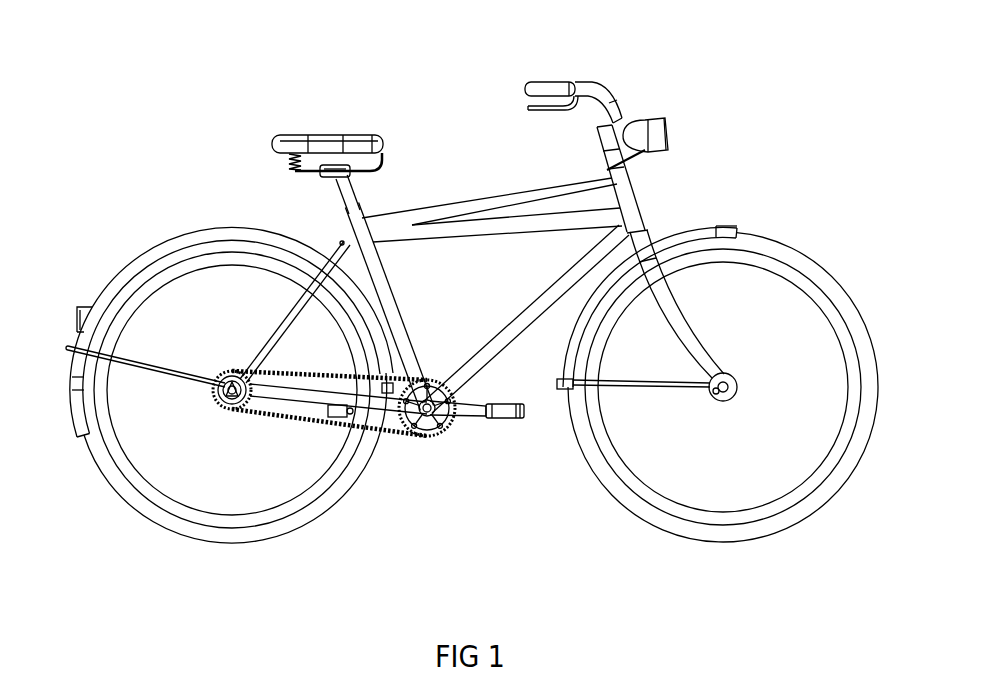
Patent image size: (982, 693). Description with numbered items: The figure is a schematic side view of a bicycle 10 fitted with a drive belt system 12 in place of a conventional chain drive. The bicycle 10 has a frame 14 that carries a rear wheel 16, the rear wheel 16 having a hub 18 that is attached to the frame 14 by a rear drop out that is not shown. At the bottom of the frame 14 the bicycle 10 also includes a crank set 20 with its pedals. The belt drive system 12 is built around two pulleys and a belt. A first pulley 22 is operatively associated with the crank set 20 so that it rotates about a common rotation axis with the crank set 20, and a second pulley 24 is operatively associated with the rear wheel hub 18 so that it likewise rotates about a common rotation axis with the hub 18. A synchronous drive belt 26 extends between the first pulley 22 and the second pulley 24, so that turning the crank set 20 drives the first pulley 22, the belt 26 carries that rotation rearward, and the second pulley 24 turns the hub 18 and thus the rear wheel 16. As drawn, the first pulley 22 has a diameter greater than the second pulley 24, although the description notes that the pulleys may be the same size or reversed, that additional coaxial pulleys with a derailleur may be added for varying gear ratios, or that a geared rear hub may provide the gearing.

The bicycle 10 is at (447, 345).
The drive belt system 12 is at (420, 466).
The frame 14 is at (268, 167).
The rear wheel 16 is at (87, 423).
The hub 18 is at (218, 408).
The crank set 20 is at (483, 420).
The first pulley 22 is at (450, 440).
The second pulley 24 is at (242, 403).
The synchronous drive belt 26 is at (390, 437).